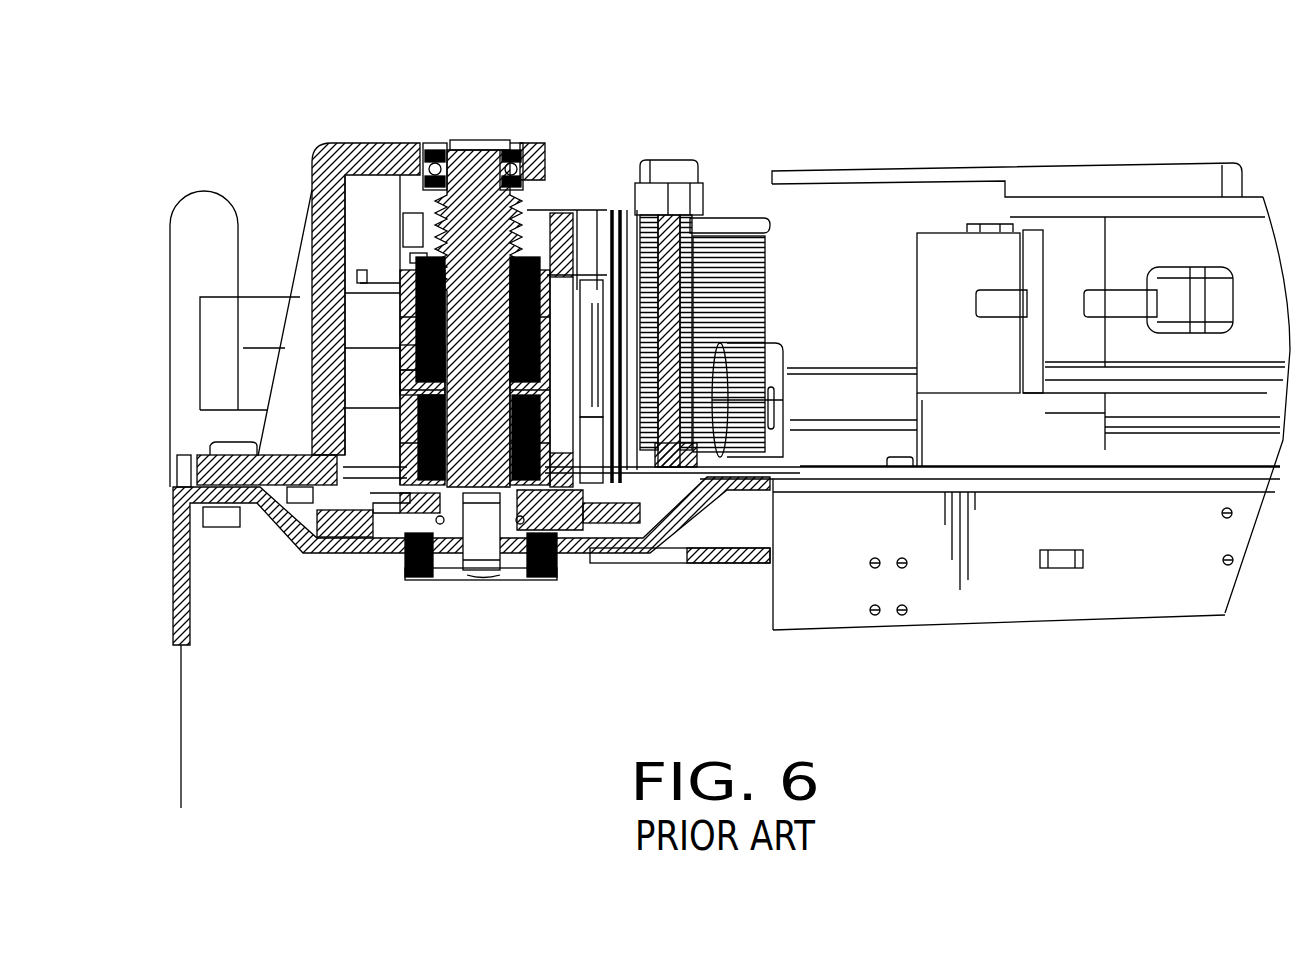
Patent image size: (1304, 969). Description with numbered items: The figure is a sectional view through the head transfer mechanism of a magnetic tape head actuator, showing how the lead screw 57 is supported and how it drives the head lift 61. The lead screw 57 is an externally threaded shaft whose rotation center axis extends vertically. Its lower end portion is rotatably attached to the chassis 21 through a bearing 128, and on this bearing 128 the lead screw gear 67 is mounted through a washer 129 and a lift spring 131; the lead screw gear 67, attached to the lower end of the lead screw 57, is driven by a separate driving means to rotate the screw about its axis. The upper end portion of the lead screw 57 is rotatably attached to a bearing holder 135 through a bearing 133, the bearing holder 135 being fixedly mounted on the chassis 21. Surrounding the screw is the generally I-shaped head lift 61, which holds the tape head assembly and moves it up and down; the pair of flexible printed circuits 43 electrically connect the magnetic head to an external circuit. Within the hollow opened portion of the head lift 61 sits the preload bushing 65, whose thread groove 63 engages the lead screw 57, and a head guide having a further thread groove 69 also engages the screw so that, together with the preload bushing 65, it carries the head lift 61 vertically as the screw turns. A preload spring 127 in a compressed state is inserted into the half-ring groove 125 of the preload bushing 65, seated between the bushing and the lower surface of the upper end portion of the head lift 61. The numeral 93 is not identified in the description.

The chassis 21 is at (320, 550).
The flexible printed circuits 43 is at (176, 191).
The lead screw 57 is at (545, 222).
The head lift 61 is at (395, 320).
The thread groove 63 is at (400, 382).
The preload bushing 65 is at (545, 337).
The lead screw gear 67 is at (522, 565).
The thread groove 69 is at (512, 577).
The threaded shaft 93 is at (413, 160).
The half-ring groove 125 is at (400, 358).
The preload spring 127 is at (312, 190).
The bearing 128 is at (497, 580).
The washer 129 is at (408, 562).
The lift spring 131 is at (393, 560).
The bearing 133 is at (498, 143).
The bearing holder 135 is at (342, 303).